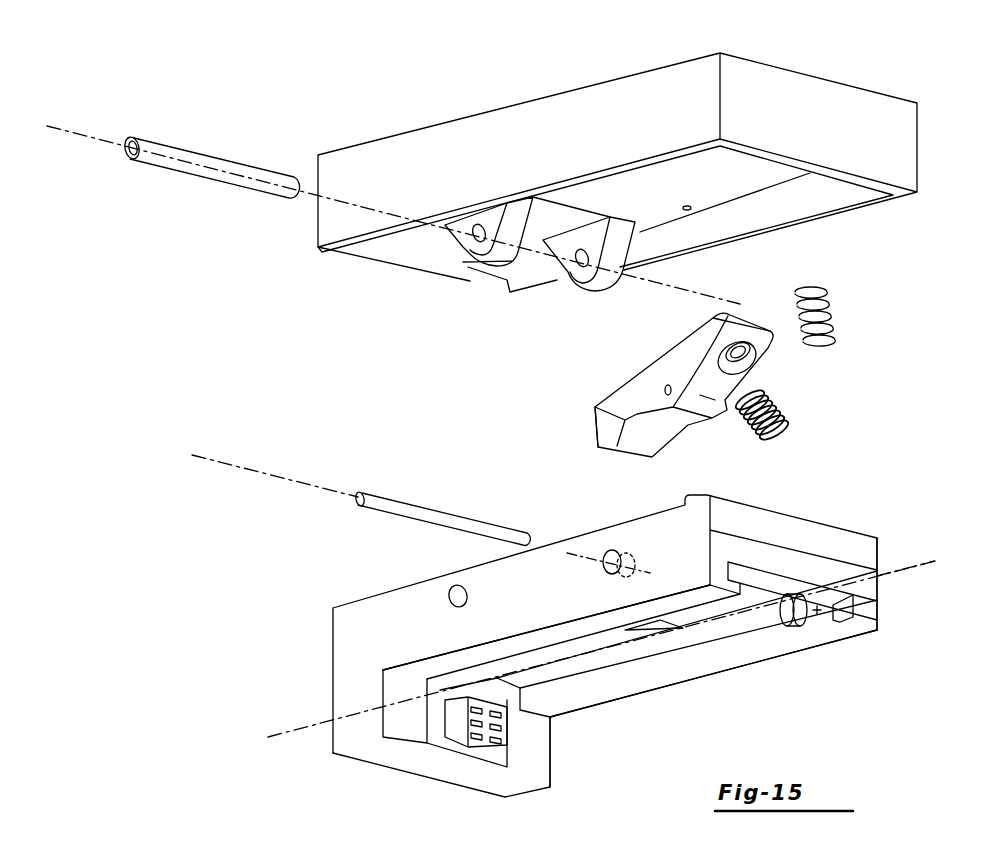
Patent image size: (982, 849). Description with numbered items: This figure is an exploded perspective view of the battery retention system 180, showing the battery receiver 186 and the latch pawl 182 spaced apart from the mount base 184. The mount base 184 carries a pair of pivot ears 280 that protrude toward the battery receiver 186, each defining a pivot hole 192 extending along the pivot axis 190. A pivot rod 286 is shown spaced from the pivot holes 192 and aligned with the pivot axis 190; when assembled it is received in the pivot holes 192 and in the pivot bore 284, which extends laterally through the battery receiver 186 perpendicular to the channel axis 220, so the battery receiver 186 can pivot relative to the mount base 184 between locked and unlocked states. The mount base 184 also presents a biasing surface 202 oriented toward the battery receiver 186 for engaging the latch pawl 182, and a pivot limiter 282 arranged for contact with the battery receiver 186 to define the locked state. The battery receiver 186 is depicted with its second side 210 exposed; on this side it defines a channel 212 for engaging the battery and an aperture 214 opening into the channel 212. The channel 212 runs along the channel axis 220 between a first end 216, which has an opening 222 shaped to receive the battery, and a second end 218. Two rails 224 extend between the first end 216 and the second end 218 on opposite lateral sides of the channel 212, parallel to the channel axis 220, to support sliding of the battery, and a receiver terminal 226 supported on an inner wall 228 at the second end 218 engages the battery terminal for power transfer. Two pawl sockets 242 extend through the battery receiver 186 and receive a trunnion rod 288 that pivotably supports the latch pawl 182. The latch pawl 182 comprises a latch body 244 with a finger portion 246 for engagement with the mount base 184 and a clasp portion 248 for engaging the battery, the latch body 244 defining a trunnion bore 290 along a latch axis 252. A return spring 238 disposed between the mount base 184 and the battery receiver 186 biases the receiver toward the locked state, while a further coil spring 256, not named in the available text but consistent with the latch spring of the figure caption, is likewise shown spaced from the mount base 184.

The battery retention system 180 is at (382, 368).
The latch pawl 182 is at (582, 396).
The mount base 184 is at (815, 57).
The battery receiver 186 is at (360, 582).
The pivot axis 190 is at (115, 120).
The pivot hole 192 is at (566, 287).
The biasing surface 202 is at (752, 172).
The second side 210 is at (492, 652).
The channel 212 is at (638, 706).
The aperture 214 is at (623, 637).
The first end 216 is at (895, 632).
The second end 218 is at (570, 738).
The channel axis 220 is at (290, 728).
The opening 222 is at (890, 578).
The rails 224 is at (855, 625).
The receiver terminal 226 is at (492, 742).
The inner wall 228 is at (400, 732).
The return spring 238 is at (830, 308).
The pawl sockets 242 is at (644, 548).
The latch body 244 is at (712, 397).
The finger portion 246 is at (750, 313).
The clasp portion 248 is at (590, 432).
The latch axis 252 is at (237, 462).
The compression spring (256') 256 is at (789, 410).
The pivot ears 280 is at (624, 245).
The pivot limiter 282 is at (380, 246).
The pivot bore 284 is at (452, 596).
The pivot rod 286 is at (232, 170).
The trunnion rod 288 is at (415, 510).
The trunnion bore 290 is at (664, 386).